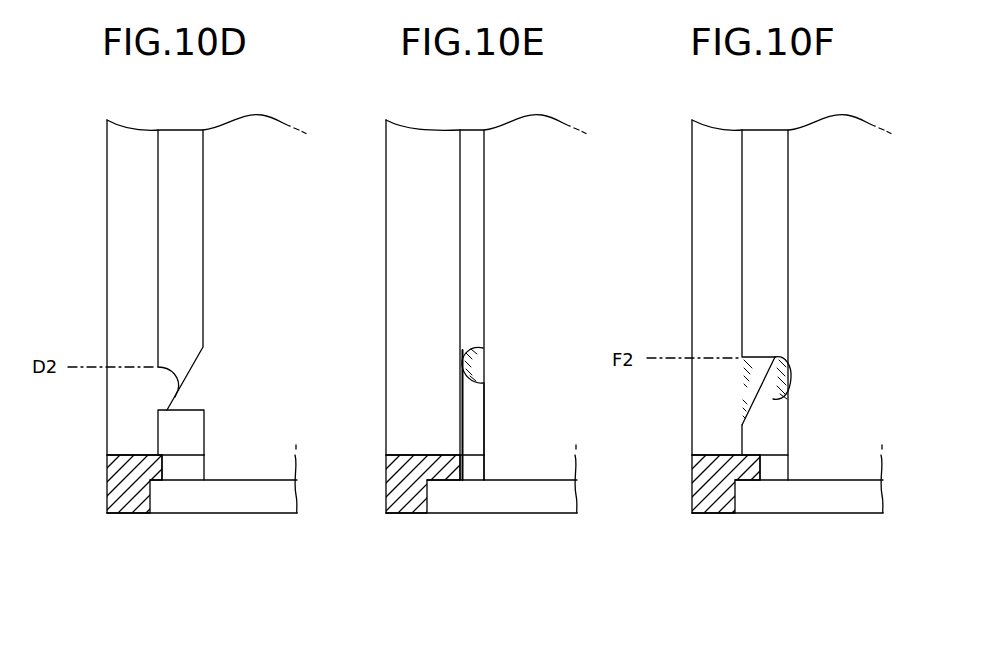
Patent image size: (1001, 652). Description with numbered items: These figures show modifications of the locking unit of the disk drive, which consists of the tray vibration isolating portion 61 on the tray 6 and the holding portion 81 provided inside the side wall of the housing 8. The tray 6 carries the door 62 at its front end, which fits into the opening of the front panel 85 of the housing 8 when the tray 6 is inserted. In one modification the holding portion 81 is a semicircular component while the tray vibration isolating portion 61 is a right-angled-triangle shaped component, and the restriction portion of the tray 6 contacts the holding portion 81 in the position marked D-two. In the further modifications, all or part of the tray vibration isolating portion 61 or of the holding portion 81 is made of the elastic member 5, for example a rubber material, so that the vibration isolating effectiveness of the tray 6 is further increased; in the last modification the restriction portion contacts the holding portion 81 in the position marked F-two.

In FIG. 10E, the elastic member 5 is at (483, 363).
In FIG. 10F, the elastic member 5 is at (745, 394).
In FIG. 10D, the tray 6 is at (203, 180).
In FIG. 10E, the tray 6 is at (484, 183).
In FIG. 10F, the tray 6 is at (788, 183).
In FIG. 10D, the housing 8 is at (107, 268).
In FIG. 10E, the housing 8 is at (386, 268).
In FIG. 10F, the housing 8 is at (692, 268).
In FIG. 10D, the tray vibration isolating portion 61 is at (196, 390).
In FIG. 10E, the tray vibration isolating portion 61 is at (477, 369).
In FIG. 10F, the tray vibration isolating portion 61 is at (787, 378).
In FIG. 10D, the door 62 is at (288, 515).
In FIG. 10E, the door 62 is at (567, 515).
In FIG. 10F, the door 62 is at (873, 515).
In FIG. 10D, the holding portion 81 is at (160, 397).
In FIG. 10E, the holding portion 81 is at (460, 392).
In FIG. 10F, the holding portion 81 is at (773, 360).
In FIG. 10D, the front panel 85 is at (135, 513).
In FIG. 10E, the front panel 85 is at (413, 515).
In FIG. 10F, the front panel 85 is at (690, 517).